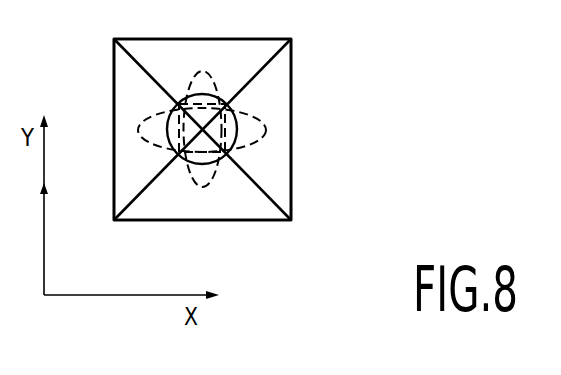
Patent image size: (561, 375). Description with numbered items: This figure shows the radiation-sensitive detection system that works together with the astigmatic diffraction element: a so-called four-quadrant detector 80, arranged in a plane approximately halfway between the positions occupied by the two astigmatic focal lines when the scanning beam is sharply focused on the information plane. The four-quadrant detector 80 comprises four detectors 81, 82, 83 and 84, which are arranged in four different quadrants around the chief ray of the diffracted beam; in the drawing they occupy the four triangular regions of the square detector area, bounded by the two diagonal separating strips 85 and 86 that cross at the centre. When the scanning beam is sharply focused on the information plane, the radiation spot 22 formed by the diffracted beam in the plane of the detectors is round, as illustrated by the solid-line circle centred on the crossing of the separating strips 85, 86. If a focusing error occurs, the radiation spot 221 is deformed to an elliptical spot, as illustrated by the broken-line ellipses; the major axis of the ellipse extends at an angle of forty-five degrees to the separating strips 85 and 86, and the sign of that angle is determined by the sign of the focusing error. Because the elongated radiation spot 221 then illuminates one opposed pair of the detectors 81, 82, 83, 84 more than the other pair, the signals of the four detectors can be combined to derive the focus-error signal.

The four-quadrant detector 80 is at (253, 134).
The detector 81 is at (251, 58).
The detector 82 is at (130, 86).
The detector 83 is at (162, 210).
The detector 84 is at (280, 185).
The separating strip 85 is at (277, 58).
The separating strip 86 is at (270, 204).
The radiation spot 22 is at (250, 129).
The deformed radiation spot 221 is at (233, 129).